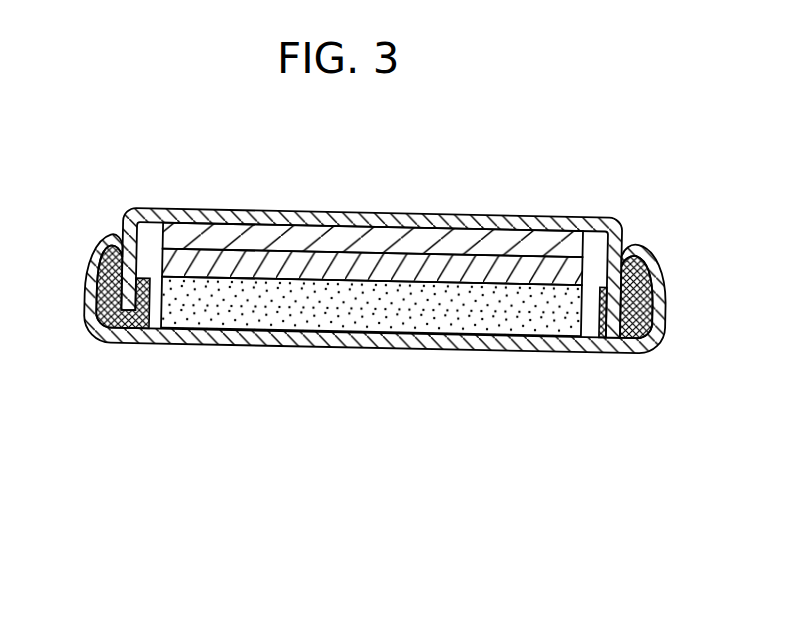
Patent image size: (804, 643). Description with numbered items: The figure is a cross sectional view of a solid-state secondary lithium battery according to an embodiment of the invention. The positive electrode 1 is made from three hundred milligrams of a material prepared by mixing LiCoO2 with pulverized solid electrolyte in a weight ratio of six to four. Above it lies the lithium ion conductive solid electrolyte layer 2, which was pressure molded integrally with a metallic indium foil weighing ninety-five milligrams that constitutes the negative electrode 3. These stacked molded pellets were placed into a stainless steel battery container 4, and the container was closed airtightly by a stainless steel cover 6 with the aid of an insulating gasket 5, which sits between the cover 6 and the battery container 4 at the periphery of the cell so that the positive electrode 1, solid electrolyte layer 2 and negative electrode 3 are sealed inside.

The positive electrode 1 is at (452, 323).
The solid electrolyte layer 2 is at (487, 264).
The negative electrode 3 is at (427, 234).
The battery container 4 is at (141, 340).
The gasket 5 is at (103, 302).
The cover 6 is at (207, 218).